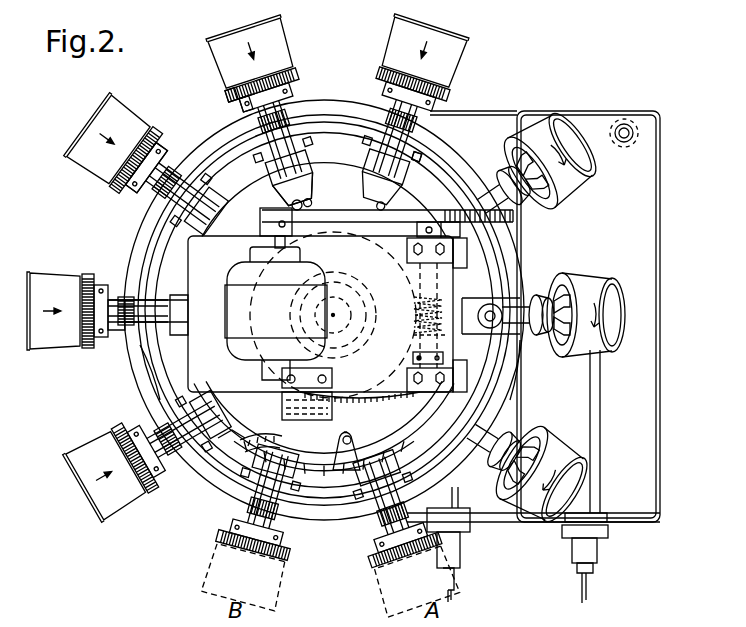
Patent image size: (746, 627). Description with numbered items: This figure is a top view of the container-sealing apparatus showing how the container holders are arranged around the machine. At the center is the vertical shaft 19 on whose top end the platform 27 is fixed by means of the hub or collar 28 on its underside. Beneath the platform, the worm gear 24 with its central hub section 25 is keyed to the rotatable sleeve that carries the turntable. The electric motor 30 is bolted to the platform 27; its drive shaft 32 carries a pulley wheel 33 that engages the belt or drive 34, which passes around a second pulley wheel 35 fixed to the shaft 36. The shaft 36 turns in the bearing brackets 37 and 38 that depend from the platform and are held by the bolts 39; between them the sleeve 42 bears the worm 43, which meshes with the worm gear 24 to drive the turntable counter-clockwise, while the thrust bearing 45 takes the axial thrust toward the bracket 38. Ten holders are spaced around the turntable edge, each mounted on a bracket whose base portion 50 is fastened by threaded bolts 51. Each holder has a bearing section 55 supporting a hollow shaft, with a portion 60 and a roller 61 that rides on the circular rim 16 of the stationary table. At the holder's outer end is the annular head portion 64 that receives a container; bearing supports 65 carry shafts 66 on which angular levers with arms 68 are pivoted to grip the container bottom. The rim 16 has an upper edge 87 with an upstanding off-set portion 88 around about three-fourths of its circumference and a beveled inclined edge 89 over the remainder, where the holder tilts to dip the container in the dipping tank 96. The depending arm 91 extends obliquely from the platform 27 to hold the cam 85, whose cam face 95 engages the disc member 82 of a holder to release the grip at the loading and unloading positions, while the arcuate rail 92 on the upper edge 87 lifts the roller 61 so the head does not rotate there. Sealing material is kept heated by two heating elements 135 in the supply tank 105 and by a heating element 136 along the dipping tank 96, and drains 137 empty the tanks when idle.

The circular rim 16 is at (142, 362).
The shaft 19 is at (344, 284).
The worm gear 24 is at (356, 397).
The hub section 25 is at (377, 318).
The platform 27 is at (320, 314).
The hub or collar 28 is at (358, 296).
The electric motor 30 is at (278, 317).
The drive shaft 32 is at (272, 241).
The pulley wheel 33 is at (259, 218).
The belt or drive 34 is at (328, 212).
The pulley wheel 35 is at (404, 211).
The shaft 36 is at (432, 210).
The bearing bracket 37 is at (468, 262).
The bearing bracket 38 is at (456, 376).
The bolts 39 is at (407, 254).
The sleeve 42 is at (416, 338).
The spiral gear or worm 43 is at (416, 311).
The thrust bearing 45 is at (440, 356).
The base portion 50 is at (311, 184).
The threaded bolts 51 is at (292, 192).
The cylindrically shaped section 55 is at (156, 315).
The shaft portion 60 is at (118, 318).
The roller 61 is at (262, 118).
The annular head portion 64 is at (236, 82).
The bearing supports 65 is at (296, 80).
The shaft 66 is at (290, 80).
The lever arm 68 is at (158, 146).
The disc member 82 is at (490, 303).
The cam 85 is at (260, 455).
The upper edge 87 is at (160, 248).
The off-set portion 88 is at (141, 243).
The inclined edge 89 is at (521, 362).
The depending arm 91 is at (331, 441).
The rail 92 is at (322, 510).
The cam face 95 is at (229, 432).
The dipping tank 96 is at (626, 524).
The supply tank 105 is at (490, 522).
The heating elements 135 is at (465, 500).
The heating element 136 is at (598, 415).
The outlets or drains 137 is at (624, 150).